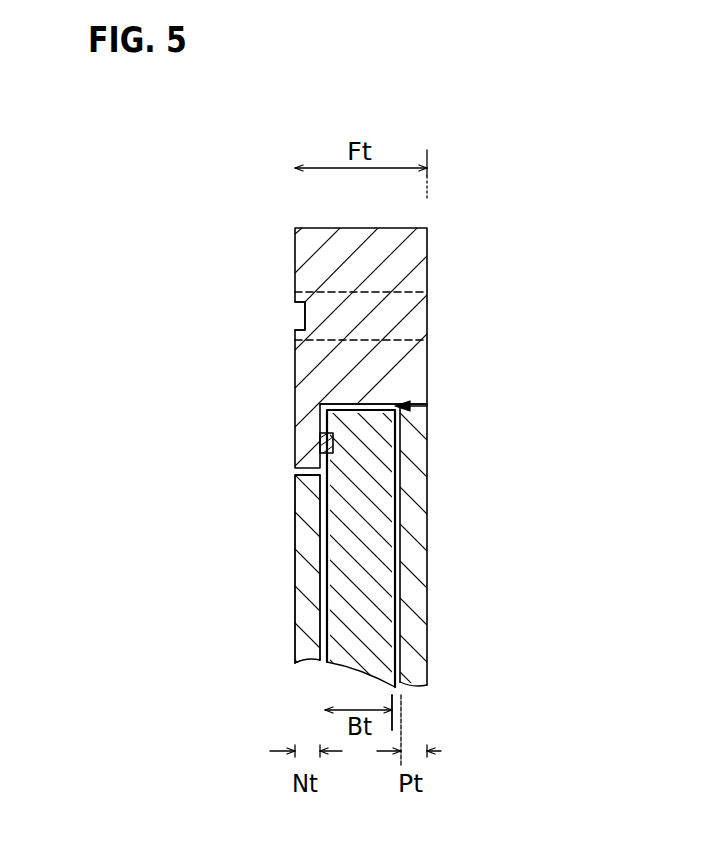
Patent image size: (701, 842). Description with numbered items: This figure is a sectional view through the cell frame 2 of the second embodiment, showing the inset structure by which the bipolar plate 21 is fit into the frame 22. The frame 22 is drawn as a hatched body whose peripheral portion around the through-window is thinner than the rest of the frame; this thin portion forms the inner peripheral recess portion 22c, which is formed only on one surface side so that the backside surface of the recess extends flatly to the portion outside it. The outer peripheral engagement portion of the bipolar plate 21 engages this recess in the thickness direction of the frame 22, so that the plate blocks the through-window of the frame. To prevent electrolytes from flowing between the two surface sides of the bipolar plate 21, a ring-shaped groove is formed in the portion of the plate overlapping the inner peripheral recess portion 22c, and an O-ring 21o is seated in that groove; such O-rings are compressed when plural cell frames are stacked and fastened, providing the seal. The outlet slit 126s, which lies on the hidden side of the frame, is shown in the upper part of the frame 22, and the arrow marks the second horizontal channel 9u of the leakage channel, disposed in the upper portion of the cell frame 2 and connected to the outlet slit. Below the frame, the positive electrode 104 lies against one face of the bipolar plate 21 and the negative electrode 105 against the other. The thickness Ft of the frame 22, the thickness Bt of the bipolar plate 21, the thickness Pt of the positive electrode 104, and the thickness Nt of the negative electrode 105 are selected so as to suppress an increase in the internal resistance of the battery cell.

The cell frame 2 is at (263, 200).
The frame 22 is at (427, 254).
The outlet slit 126s is at (299, 312).
The inner peripheral recess portion 22c is at (322, 437).
The second horizontal channel 9u is at (475, 409).
The bipolar plate 21 is at (338, 603).
The O-ring 21o is at (322, 437).
The positive electrode 104 is at (430, 530).
The negative electrode 105 is at (303, 494).